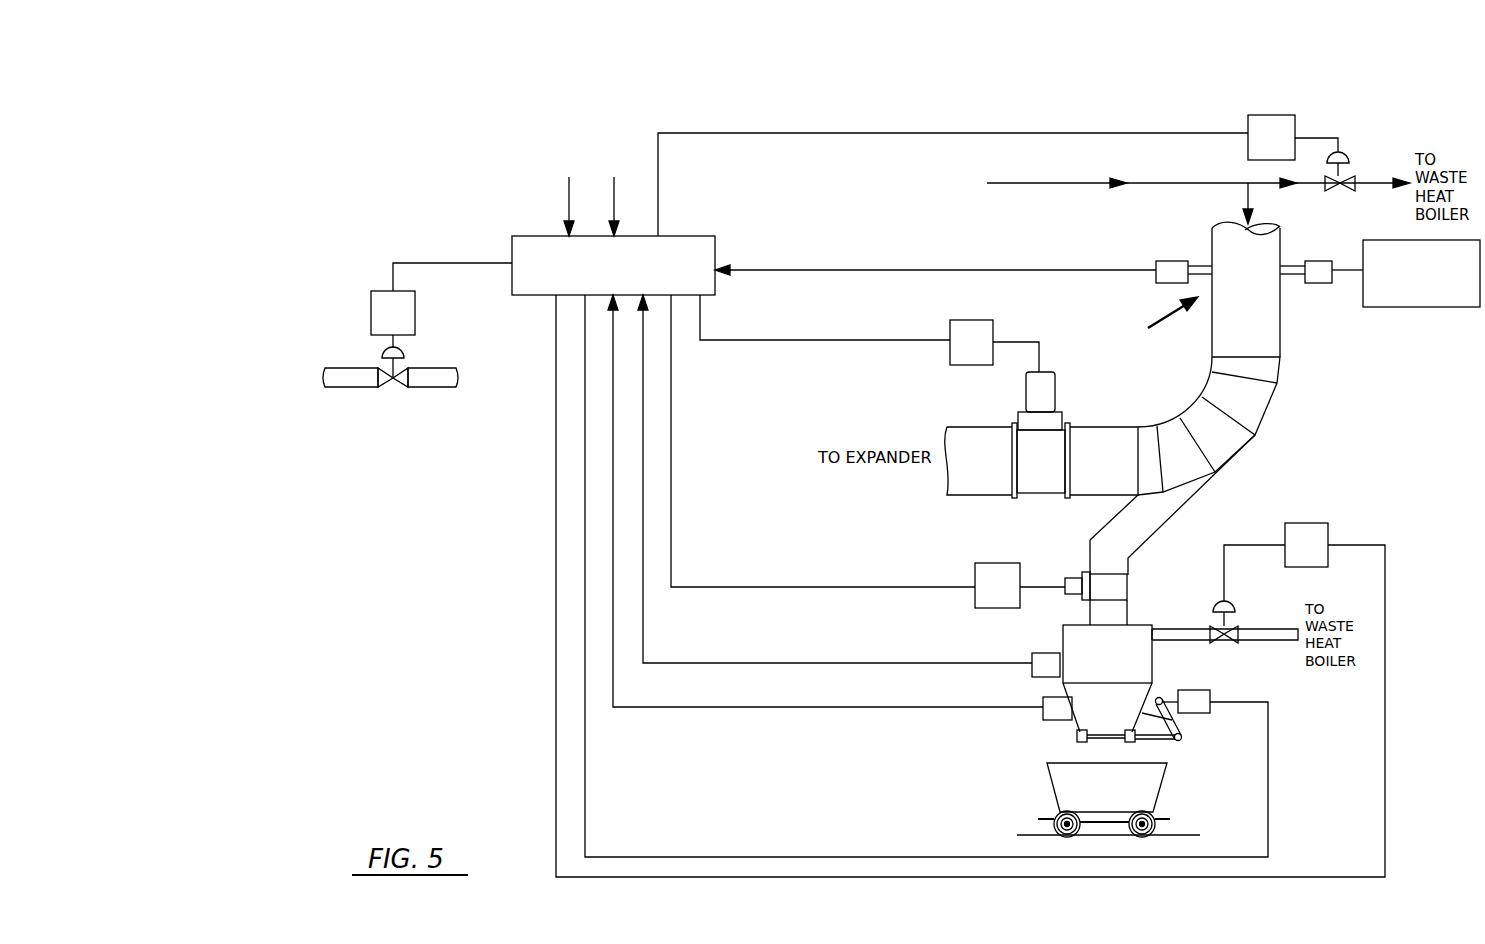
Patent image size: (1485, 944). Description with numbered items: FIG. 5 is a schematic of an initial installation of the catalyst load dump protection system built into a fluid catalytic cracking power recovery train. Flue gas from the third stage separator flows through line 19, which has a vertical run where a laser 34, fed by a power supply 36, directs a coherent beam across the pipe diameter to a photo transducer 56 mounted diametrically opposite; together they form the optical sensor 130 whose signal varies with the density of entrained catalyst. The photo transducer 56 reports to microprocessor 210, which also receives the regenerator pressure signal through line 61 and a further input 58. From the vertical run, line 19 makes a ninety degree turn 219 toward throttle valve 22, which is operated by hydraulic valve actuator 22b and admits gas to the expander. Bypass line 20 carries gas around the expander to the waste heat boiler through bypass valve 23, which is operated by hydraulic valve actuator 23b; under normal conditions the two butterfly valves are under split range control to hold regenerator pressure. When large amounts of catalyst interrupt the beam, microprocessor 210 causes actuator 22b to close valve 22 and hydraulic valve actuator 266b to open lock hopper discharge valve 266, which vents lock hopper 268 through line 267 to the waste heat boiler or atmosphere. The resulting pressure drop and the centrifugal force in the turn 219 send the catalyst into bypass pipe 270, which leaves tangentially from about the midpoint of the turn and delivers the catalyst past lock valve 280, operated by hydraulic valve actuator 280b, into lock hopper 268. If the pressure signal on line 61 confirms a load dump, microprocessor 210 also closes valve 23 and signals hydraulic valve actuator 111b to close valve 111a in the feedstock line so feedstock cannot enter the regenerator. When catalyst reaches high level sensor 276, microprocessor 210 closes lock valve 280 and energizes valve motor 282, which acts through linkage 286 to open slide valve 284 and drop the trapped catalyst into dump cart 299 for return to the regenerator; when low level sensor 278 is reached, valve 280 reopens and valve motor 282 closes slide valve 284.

The input signal line 58 is at (610, 198).
The line 61 is at (567, 198).
The microprocessor 210 is at (510, 233).
The hydraulic valve actuator 111b is at (369, 313).
The valve 111a is at (387, 355).
The line 19 is at (1042, 182).
The hydraulic valve actuator 23b is at (1247, 148).
The bypass valve 23 is at (1352, 155).
The bypass line 20 is at (1375, 190).
The photo transducer 56 is at (1173, 258).
The laser 34 is at (1318, 287).
The power supply 36 is at (1418, 310).
The optical sensor 130 is at (1154, 319).
The hydraulic valve actuator 22b is at (968, 318).
The throttle valve 22 is at (1057, 392).
The ninety degree turn 219 is at (1263, 420).
The bypass pipe 270 is at (1177, 512).
The hydraulic valve actuator 280b is at (997, 560).
The lock valve 280 is at (1075, 577).
The hydraulic valve actuator 266b is at (1310, 523).
The lock hopper discharge valve 266 is at (1217, 607).
The line 267 is at (1290, 642).
The lock hopper 268 is at (1060, 642).
The high level sensor 276 is at (1032, 675).
The low level sensor 278 is at (1043, 718).
The valve motor 282 is at (1197, 688).
The slide valve 284 is at (1088, 742).
The linkage 286 is at (1181, 724).
The dump cart 299 is at (1050, 786).